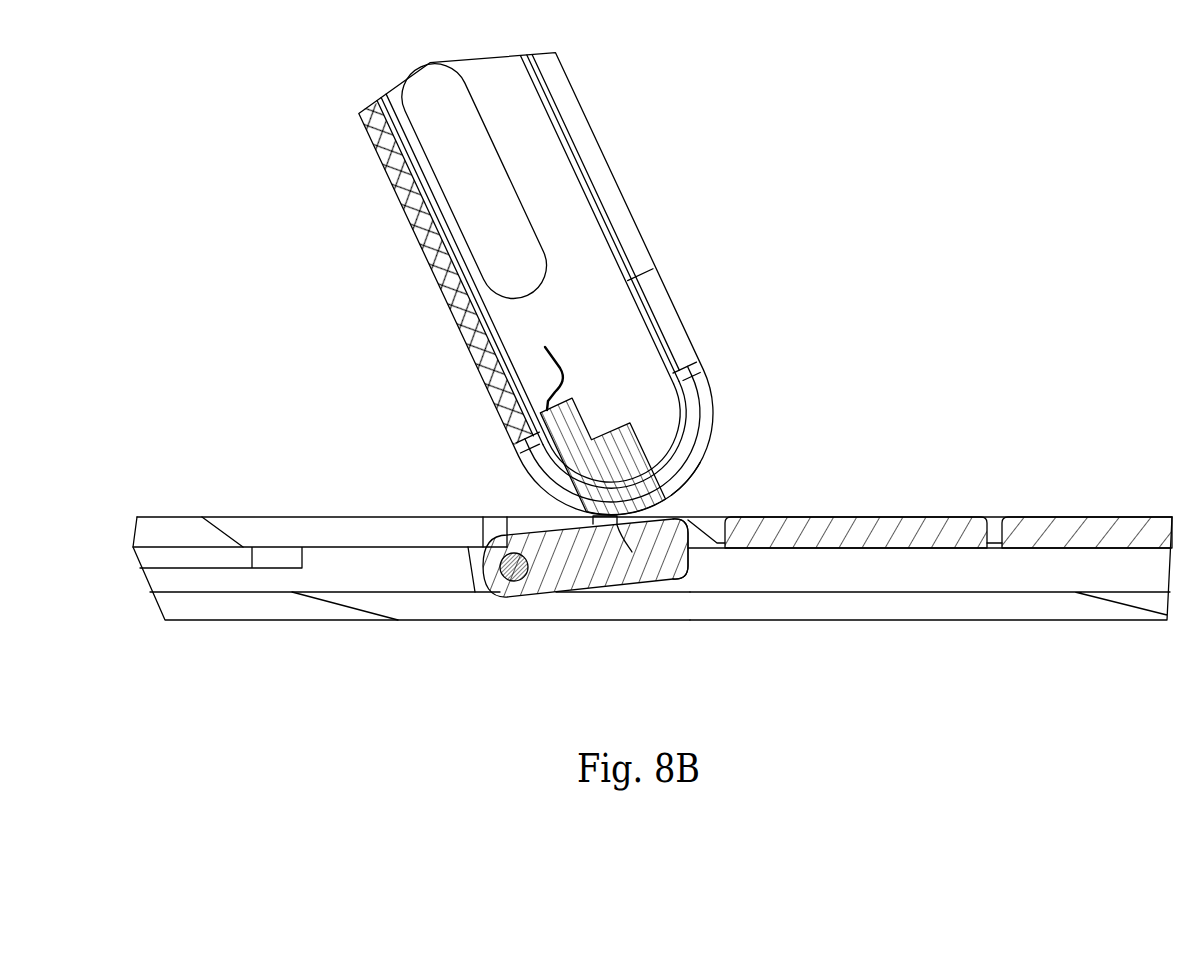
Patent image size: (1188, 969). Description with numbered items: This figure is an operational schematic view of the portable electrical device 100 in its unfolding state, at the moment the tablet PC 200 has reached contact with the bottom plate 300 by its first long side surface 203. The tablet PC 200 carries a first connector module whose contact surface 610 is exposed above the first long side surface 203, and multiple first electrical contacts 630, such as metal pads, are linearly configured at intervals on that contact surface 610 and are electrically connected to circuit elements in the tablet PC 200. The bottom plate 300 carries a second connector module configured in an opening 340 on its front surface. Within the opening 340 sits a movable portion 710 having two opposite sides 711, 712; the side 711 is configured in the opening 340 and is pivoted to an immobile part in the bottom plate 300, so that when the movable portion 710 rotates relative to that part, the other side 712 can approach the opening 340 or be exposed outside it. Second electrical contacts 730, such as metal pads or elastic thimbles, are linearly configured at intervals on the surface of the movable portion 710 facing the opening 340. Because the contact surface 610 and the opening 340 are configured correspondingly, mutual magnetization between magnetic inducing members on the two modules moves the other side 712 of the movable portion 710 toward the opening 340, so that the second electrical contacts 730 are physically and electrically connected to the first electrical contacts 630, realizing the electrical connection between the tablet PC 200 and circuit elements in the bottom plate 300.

The portable electrical device 100 is at (154, 64).
The tablet PC 200 is at (647, 226).
The first long side surface 203 is at (687, 486).
The bottom plate 300 is at (1060, 499).
The opening 340 is at (516, 527).
The contact surface 610 is at (617, 461).
The first electrical contacts 630 is at (598, 527).
The movable portion 710 is at (570, 612).
The side of the movable portion 711 is at (512, 583).
The other side of the movable portion 712 is at (663, 581).
The second electrical contacts 730 is at (628, 531).